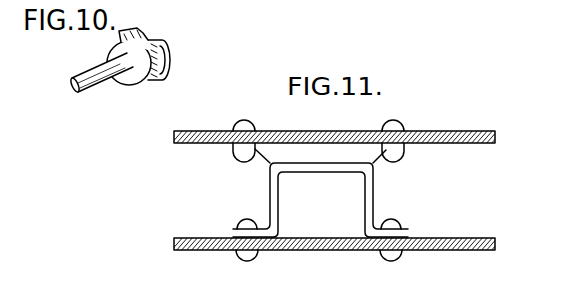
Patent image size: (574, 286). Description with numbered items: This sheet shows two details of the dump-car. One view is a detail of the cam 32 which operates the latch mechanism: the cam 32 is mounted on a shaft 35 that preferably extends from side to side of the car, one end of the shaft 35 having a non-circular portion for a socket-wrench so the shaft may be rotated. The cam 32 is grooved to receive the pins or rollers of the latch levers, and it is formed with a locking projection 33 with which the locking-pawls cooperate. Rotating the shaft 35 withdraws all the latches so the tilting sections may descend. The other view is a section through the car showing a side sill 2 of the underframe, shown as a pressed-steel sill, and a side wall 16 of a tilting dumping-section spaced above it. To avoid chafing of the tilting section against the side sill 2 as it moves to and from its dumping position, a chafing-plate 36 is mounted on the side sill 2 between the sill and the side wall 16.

In FIG. 10, the cam 32 is at (128, 83).
In FIG. 10, the locking projection 33 is at (138, 28).
In FIG. 10, the shaft 35 is at (88, 72).
In FIG. 11, the side walls 16 is at (462, 125).
In FIG. 11, the side sills 2 is at (472, 239).
In FIG. 11, the chafing-plates 36 is at (363, 184).